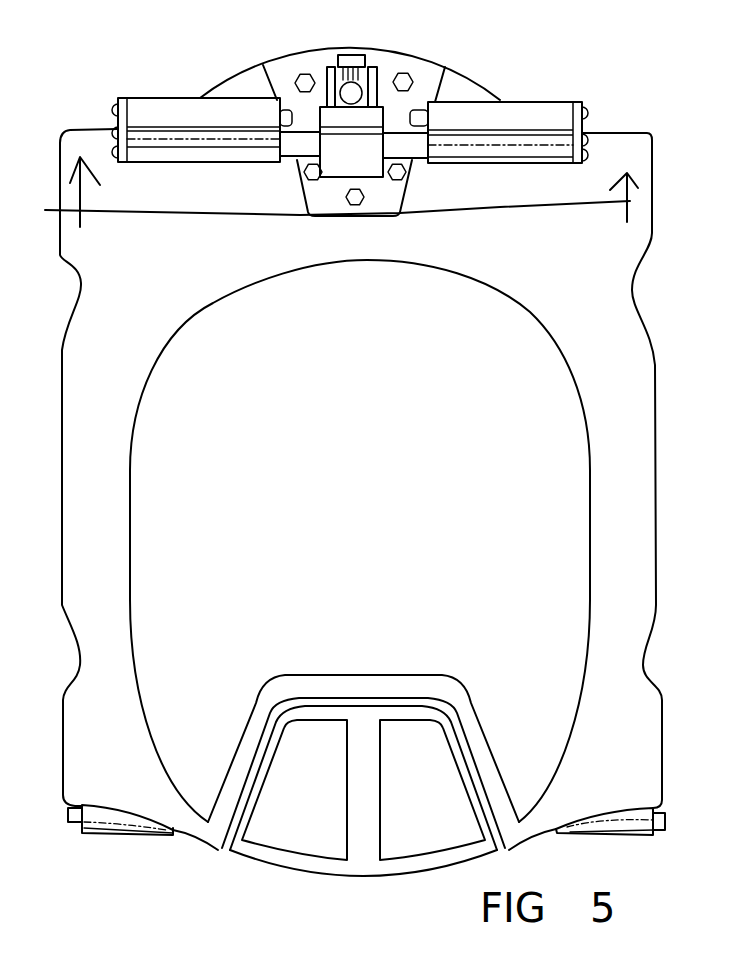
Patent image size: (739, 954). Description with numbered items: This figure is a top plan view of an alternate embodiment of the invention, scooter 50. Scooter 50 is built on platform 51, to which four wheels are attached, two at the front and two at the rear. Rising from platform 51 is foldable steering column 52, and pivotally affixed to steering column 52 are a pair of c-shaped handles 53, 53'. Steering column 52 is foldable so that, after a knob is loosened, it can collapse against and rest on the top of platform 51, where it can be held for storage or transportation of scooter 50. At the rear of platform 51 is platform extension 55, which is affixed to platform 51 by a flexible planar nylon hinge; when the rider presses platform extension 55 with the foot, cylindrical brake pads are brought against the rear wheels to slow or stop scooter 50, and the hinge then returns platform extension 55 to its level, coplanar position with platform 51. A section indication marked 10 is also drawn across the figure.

The section line / viewing direction 10 is at (343, 205).
The scooter 50 is at (361, 462).
The platform 51 is at (640, 256).
The foldable steering column 52 is at (377, 67).
The c-shaped handle 53 is at (202, 116).
The c-shaped handle 53' is at (511, 108).
The platform extension 55 is at (280, 860).